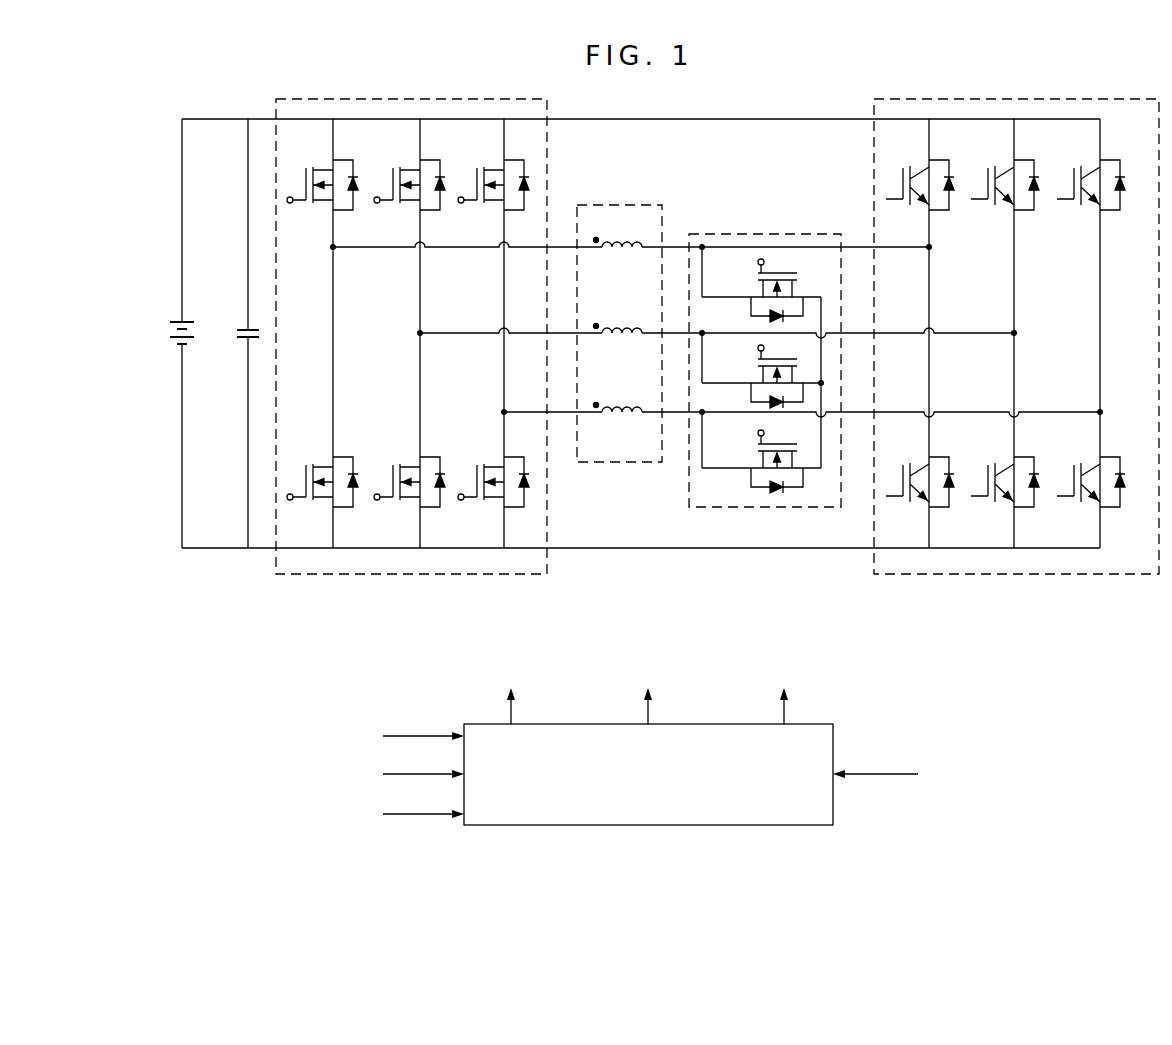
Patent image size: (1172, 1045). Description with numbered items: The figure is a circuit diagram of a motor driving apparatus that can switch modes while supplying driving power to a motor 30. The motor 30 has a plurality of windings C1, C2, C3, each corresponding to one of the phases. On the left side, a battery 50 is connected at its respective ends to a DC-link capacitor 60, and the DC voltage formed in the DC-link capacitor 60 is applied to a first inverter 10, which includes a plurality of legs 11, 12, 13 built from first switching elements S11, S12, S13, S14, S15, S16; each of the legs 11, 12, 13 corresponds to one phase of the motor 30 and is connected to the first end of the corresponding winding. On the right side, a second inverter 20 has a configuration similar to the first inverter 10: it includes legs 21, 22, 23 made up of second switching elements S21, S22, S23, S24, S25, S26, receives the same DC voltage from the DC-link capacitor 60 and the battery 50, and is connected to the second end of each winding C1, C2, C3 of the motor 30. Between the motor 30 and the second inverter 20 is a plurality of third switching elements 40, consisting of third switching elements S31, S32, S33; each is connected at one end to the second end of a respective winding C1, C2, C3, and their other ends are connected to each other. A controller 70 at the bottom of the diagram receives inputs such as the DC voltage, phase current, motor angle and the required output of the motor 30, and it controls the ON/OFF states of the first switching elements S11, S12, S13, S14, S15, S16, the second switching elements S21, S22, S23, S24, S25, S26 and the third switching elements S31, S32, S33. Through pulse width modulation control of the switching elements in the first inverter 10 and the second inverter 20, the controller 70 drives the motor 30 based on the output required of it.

The first inverter 10 is at (297, 575).
The leg 11 is at (322, 380).
The leg 12 is at (409, 380).
The leg 13 is at (493, 380).
The second inverter 20 is at (899, 575).
The leg 21 is at (931, 380).
The leg 22 is at (1016, 380).
The leg 23 is at (1103, 380).
The motor 30 is at (619, 301).
The plurality of third switching elements 40 is at (765, 337).
The battery 50 is at (175, 321).
The DC-link capacitor 60 is at (238, 329).
The controller 70 is at (833, 808).
The first switching element S11 is at (322, 174).
The first switching element S12 is at (322, 495).
The first switching element S13 is at (409, 174).
The first switching element S14 is at (409, 495).
The first switching element S15 is at (493, 174).
The first switching element S16 is at (493, 495).
The second switching element S21 is at (931, 174).
The second switching element S22 is at (931, 495).
The second switching element S23 is at (1016, 174).
The second switching element S24 is at (1016, 495).
The second switching element S25 is at (1103, 174).
The second switching element S26 is at (1103, 495).
The third switching element S31 is at (761, 290).
The third switching element S32 is at (761, 376).
The third switching element S33 is at (761, 461).
The winding C1 is at (618, 259).
The winding C2 is at (618, 346).
The winding C3 is at (618, 424).